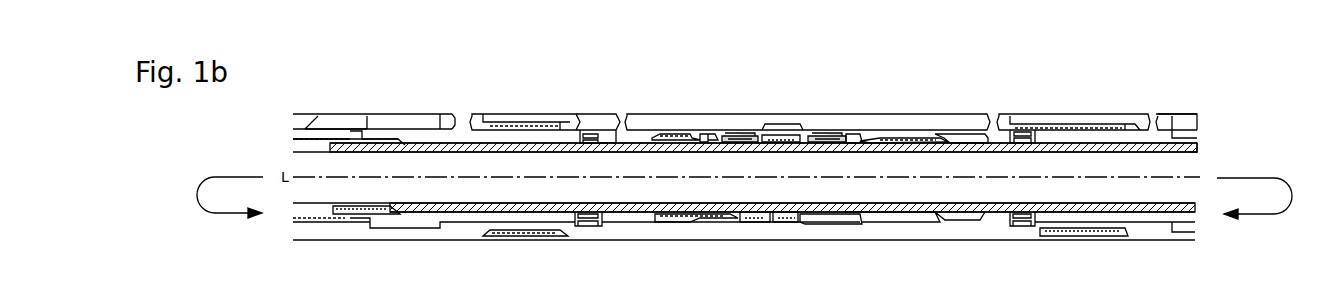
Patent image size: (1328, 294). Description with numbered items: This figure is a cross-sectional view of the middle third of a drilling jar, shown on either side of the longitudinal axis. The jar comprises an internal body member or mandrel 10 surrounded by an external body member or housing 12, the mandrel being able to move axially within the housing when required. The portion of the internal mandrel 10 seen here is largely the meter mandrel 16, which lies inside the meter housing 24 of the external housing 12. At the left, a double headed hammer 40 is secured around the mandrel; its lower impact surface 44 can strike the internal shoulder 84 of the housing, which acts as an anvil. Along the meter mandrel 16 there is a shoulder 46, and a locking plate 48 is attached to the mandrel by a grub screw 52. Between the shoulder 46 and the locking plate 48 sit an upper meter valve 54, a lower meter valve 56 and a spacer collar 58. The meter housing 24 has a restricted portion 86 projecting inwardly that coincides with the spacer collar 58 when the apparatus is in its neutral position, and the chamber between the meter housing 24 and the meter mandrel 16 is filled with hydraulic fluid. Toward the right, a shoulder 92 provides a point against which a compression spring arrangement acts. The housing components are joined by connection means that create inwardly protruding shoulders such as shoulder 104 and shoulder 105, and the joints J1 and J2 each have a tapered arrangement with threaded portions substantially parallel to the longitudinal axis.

The internal mandrel 10 is at (1201, 143).
The external housing 12 is at (1197, 108).
The meter mandrel 16 is at (521, 148).
The meter housing 24 is at (910, 125).
The double headed hammer 40 is at (331, 135).
The lower impact surface 44 is at (362, 138).
The shoulder 46 is at (850, 140).
The locking plate 48 is at (671, 137).
The grub screw 52 is at (700, 140).
The upper meter valve 54 is at (745, 135).
The lower meter valve 56 is at (838, 135).
The spacer collar 58 is at (773, 137).
The internal shoulder 84 is at (447, 125).
The restricted portion 86 is at (783, 125).
The shoulder 92 is at (1168, 125).
The inwardly protruding shoulder 104 is at (583, 131).
The shear connection 105 is at (1024, 132).
The joint J1 is at (568, 250).
The joint J2 is at (1125, 250).